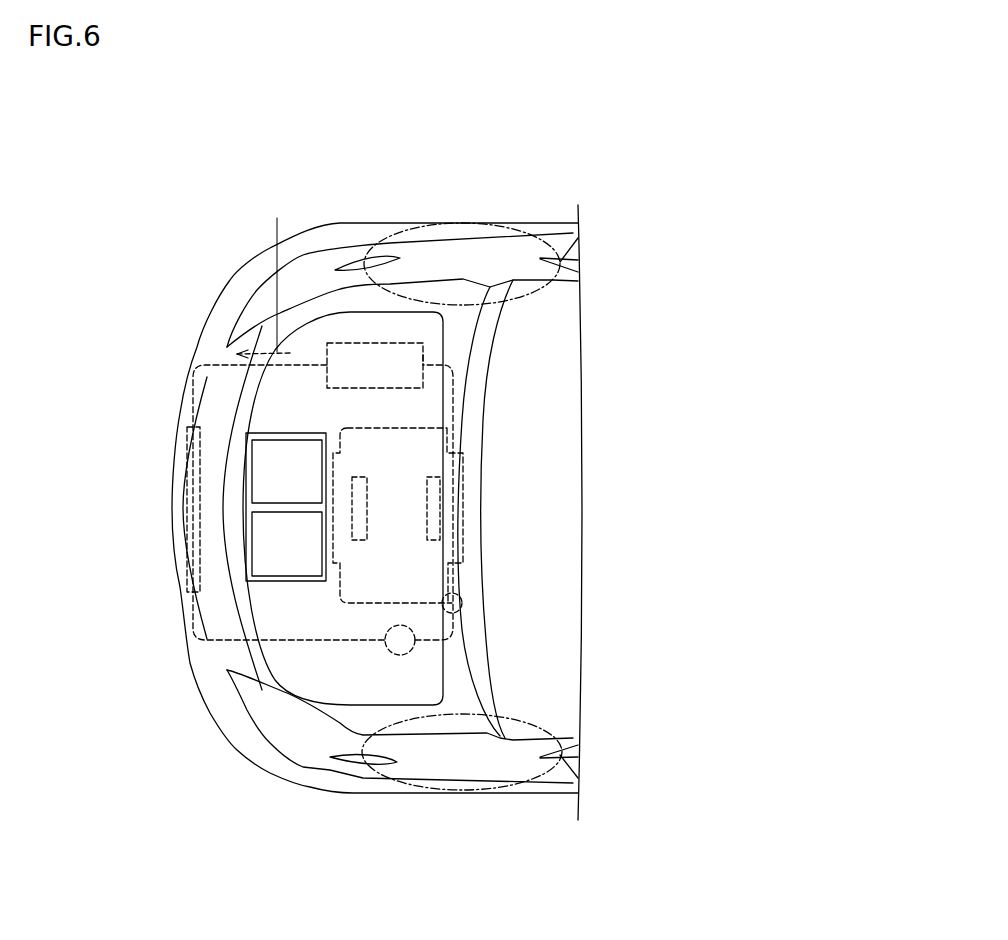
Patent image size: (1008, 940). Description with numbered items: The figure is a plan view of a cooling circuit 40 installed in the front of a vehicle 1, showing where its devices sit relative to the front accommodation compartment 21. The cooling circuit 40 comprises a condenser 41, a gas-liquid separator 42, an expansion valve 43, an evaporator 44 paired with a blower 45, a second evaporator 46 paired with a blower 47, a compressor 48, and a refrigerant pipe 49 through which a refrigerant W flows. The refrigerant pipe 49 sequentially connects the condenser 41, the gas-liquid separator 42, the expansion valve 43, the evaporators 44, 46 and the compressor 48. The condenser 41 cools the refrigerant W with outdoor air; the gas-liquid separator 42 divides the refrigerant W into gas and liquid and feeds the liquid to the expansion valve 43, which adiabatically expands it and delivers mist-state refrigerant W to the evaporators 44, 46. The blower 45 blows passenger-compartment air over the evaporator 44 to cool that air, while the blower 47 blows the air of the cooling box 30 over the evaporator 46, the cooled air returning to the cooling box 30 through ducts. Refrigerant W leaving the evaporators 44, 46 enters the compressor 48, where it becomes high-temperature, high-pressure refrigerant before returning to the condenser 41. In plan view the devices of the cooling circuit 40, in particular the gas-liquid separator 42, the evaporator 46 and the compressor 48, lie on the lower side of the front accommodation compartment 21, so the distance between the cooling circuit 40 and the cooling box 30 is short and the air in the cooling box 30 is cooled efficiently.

The vehicle 1 is at (484, 121).
The front accommodation compartment 21 is at (297, 657).
The cooling box 30 is at (218, 507).
The cooling circuit 40 is at (160, 338).
The condenser 41 is at (190, 567).
The gas-liquid separator 42 is at (400, 655).
The expansion valve 43 is at (462, 605).
The evaporator 44 is at (456, 465).
The blower 45 is at (440, 522).
The evaporator 46 is at (333, 531).
The blower 47 is at (352, 498).
The compressor 48 is at (423, 355).
The refrigerant pipe 49 is at (193, 407).
The refrigerant W is at (263, 275).